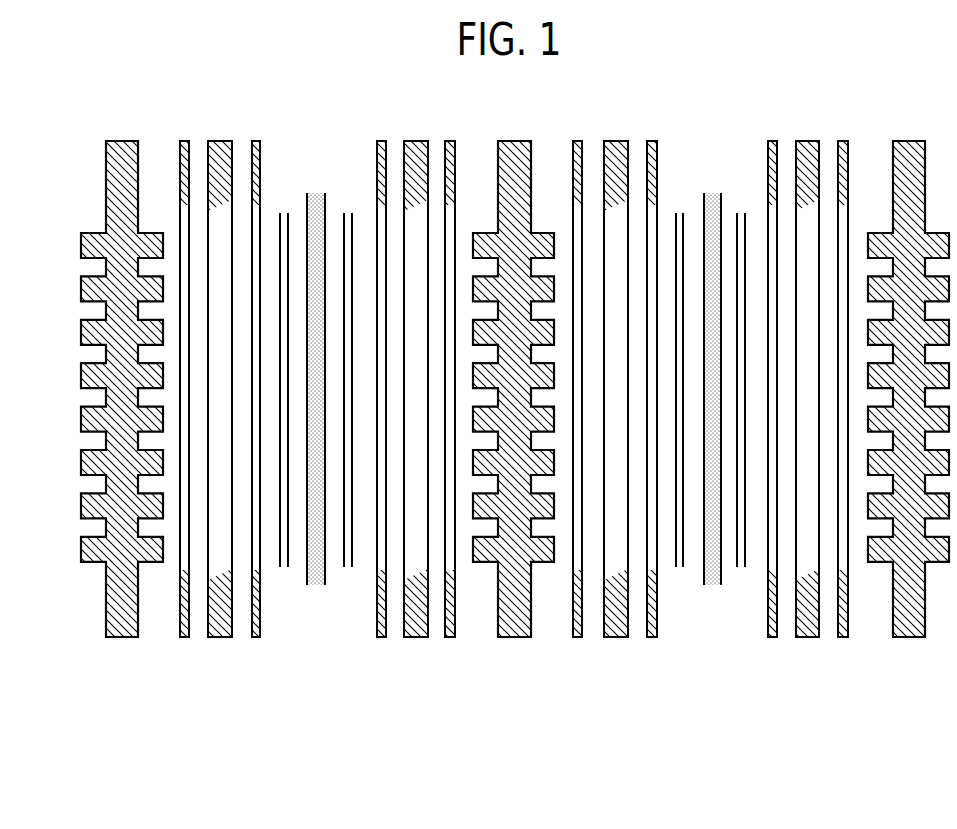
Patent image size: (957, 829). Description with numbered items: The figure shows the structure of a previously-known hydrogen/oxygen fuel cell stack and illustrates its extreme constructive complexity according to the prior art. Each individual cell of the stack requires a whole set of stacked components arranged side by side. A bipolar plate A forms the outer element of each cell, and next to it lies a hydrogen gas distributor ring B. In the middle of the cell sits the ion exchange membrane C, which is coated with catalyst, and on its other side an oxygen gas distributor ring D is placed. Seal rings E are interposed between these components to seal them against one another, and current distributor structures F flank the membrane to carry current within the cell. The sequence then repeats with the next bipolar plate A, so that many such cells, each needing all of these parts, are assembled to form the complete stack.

The bipolar plate A is at (121, 637).
The hydrogen gas distributor ring B is at (220, 637).
The ion exchange membrane C is at (316, 585).
The oxygen gas distributor ring D is at (416, 637).
The seal rings E is at (184, 637).
The current distributor structures F is at (288, 567).